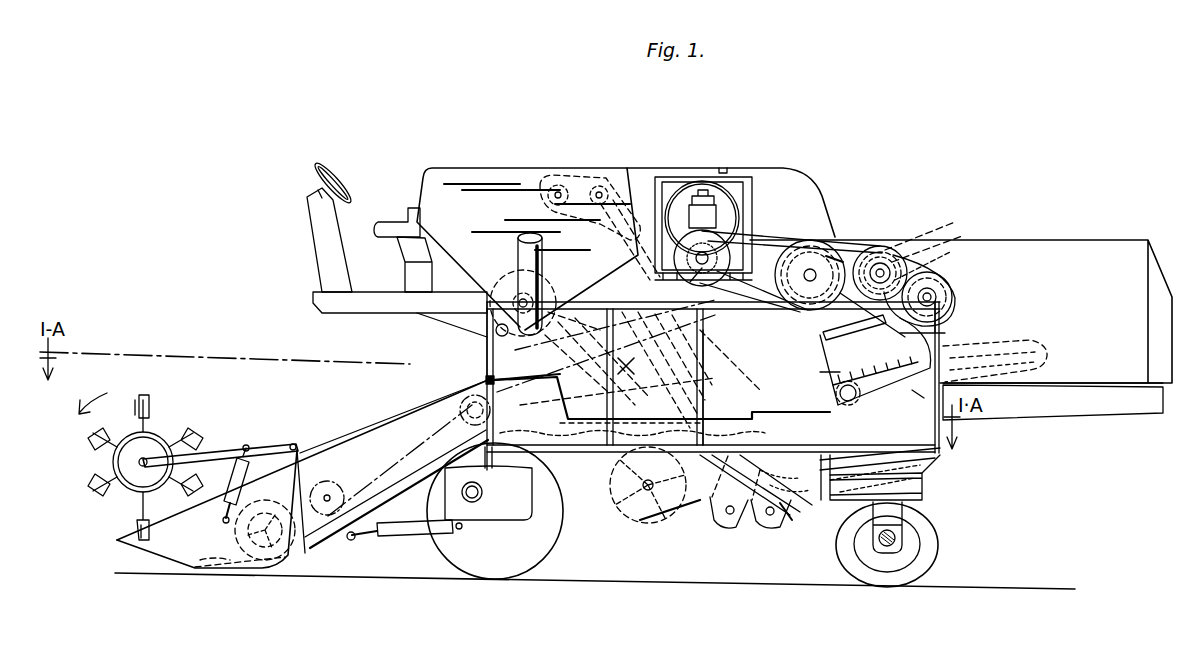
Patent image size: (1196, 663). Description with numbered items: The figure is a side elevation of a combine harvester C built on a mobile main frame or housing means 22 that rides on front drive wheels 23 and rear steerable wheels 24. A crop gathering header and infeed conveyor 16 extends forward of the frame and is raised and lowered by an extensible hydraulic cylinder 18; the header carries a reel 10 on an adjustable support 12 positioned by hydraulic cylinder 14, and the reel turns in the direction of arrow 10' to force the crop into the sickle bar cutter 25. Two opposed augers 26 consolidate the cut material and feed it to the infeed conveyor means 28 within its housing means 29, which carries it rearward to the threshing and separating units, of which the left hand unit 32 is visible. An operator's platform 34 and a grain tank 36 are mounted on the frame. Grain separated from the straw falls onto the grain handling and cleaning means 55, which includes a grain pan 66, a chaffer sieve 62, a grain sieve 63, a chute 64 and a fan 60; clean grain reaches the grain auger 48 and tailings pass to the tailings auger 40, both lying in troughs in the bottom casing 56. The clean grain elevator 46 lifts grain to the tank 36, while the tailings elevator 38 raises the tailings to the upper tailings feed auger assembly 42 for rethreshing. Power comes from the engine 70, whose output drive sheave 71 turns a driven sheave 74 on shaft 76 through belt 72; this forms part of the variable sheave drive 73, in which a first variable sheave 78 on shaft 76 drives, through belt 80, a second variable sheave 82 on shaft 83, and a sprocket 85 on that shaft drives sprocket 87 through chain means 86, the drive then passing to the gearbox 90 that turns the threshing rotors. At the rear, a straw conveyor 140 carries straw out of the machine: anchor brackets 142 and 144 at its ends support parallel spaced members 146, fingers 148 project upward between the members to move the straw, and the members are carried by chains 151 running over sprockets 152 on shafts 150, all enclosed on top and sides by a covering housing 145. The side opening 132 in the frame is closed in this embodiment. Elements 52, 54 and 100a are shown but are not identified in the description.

The reel 10 is at (145, 467).
The arrow 10' is at (113, 391).
The adjustable support 12 is at (262, 450).
The hydraulic cylinder 14 is at (230, 458).
The header and infeed conveyor 16 is at (259, 400).
The extensible hydraulic cylinder 18 is at (410, 538).
The main frame 22 is at (588, 450).
The front drive wheels 23 is at (482, 570).
The rear steerable wheels 24 is at (932, 553).
The sickle bar cutter 25 is at (205, 572).
The opposed augers 26 is at (265, 570).
The infeed conveyor means 28 is at (378, 427).
The housing means 29 is at (342, 448).
The left hand threshing and separating unit 32 is at (722, 372).
The operator's platform 34 is at (378, 296).
The grain tank 36 is at (483, 175).
The tailings elevator 38 is at (627, 353).
The tailings auger 40 is at (768, 531).
The upper tailings feed auger assembly 42 is at (484, 340).
The clean grain elevator 46 is at (700, 352).
The clean grain auger 48 is at (722, 531).
The unloading auger link 52 is at (550, 292).
The post 54 is at (518, 258).
The grain handling and cleaning means 55 is at (900, 490).
The bottom casing 56 is at (689, 532).
The fan 60 is at (630, 518).
The chaffer sieve 62 is at (777, 450).
The grain sieve 63 is at (792, 510).
The chute 64 is at (830, 450).
The grain pan 66 is at (708, 419).
The engine 70 is at (740, 238).
The output drive sheave 71 is at (698, 283).
The belt 72 is at (775, 250).
The variable sheave drive 73 is at (850, 212).
The driven sheave 74 is at (826, 256).
The shaft 76 is at (802, 296).
The first variable sheave 78 is at (760, 304).
The belt 80 is at (868, 252).
The second variable sheave 82 is at (893, 252).
The shaft 83 is at (950, 234).
The sprocket 85 is at (925, 258).
The chain means 86 is at (940, 338).
The sprocket 87 is at (954, 306).
The gearbox 90 is at (935, 282).
The feeder chain bar 100a is at (484, 380).
The opening 132 is at (934, 406).
The straw conveyor 140 is at (1053, 402).
The anchor bracket 142 is at (836, 393).
The anchor bracket 144 is at (1044, 388).
The covering housing 145 is at (1056, 240).
The parallel spaced apart members 146 is at (1018, 348).
The fingers 148 is at (875, 360).
The shafts 150 is at (959, 407).
The chains 151 is at (862, 380).
The sprockets 152 is at (1030, 364).
The combine harvester C is at (785, 165).